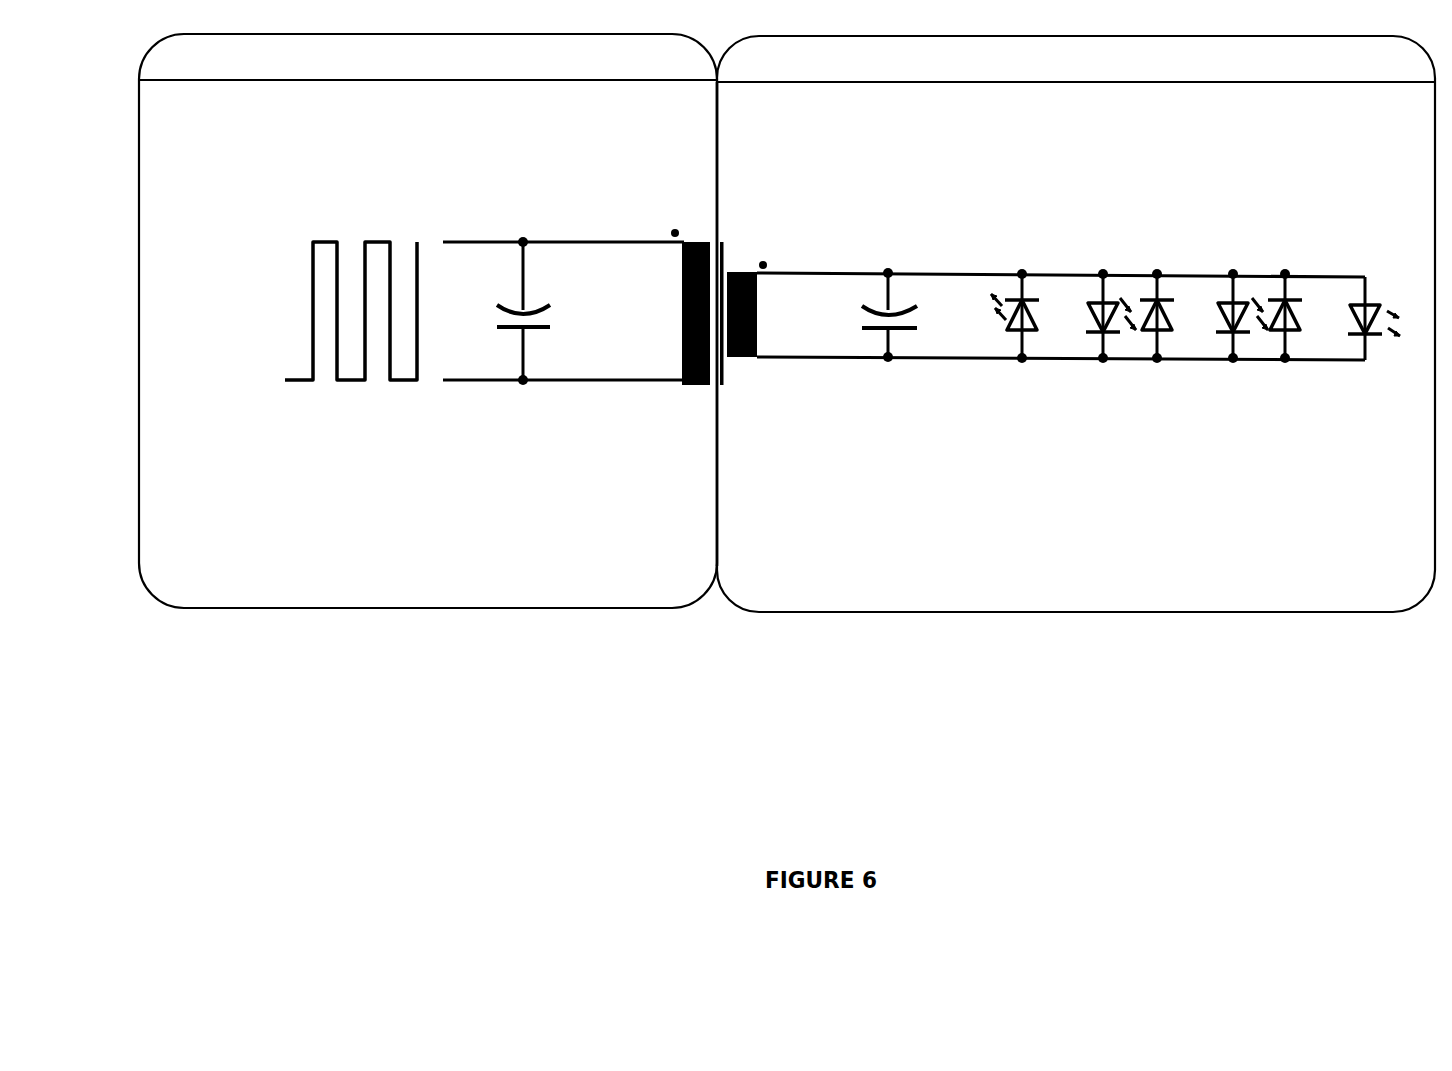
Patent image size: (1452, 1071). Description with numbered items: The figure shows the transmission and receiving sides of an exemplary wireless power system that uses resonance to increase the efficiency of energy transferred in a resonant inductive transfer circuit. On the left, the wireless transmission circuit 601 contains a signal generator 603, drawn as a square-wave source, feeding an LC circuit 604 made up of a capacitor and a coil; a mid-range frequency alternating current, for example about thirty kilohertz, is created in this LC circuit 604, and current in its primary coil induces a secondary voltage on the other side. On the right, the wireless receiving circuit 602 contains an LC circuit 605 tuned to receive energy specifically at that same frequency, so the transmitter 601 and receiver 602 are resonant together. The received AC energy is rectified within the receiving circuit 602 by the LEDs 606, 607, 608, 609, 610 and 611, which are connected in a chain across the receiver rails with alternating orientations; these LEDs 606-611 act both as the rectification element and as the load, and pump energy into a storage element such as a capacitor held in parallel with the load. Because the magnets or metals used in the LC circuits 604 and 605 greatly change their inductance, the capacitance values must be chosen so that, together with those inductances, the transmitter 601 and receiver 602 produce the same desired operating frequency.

The wireless transmission circuit 601 is at (428, 321).
The wireless receiving circuit 602 is at (1076, 324).
The signal generator 603 is at (311, 298).
The LC circuit 604 is at (563, 302).
The LC circuit 605 is at (838, 333).
The LED 606 is at (1021, 307).
The LED 607 is at (1101, 331).
The LED 608 is at (1160, 309).
The LED 609 is at (1229, 328).
The LED 610 is at (1297, 309).
The LED 611 is at (1362, 340).